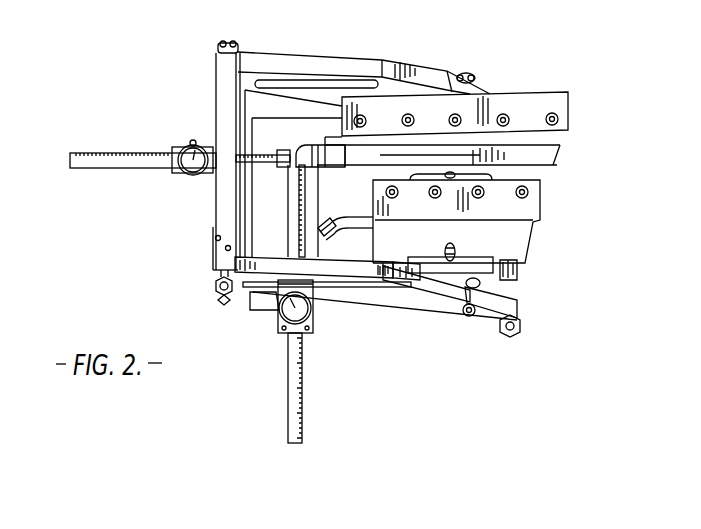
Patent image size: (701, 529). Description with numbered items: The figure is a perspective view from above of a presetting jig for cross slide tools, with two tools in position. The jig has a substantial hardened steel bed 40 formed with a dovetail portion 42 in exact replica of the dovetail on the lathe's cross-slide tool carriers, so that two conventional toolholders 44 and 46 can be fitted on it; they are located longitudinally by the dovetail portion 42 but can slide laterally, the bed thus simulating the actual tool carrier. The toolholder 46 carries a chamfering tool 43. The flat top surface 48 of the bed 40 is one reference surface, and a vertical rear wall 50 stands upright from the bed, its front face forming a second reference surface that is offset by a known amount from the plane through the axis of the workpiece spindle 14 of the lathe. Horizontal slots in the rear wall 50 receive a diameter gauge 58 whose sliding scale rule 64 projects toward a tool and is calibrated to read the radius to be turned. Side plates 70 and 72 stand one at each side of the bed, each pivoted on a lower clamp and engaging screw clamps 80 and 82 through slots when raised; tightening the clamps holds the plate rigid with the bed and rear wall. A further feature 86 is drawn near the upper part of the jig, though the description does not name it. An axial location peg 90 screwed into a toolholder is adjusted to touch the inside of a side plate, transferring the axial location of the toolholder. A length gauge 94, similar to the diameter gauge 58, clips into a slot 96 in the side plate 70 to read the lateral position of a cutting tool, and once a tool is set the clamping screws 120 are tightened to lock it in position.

The workpiece spindle 14 is at (507, 336).
The bed 40 is at (263, 211).
The dovetail portion 42 is at (475, 260).
The chamfering tool 43 is at (358, 223).
The toolholder 44 is at (492, 102).
The toolholder 46 is at (533, 238).
The top surface 48 is at (223, 100).
The vertical rear wall 50 is at (224, 194).
The diameter gauge 58 is at (147, 150).
The sliding scale rule 64 is at (110, 166).
The side plate 70 is at (405, 307).
The side plate 72 is at (395, 70).
The screw clamp 80 is at (217, 292).
The screw clamp 82 is at (461, 318).
The slot 86 is at (297, 85).
The axial location peg 90 is at (447, 252).
The length gauge 94 is at (306, 368).
The slot 96 is at (349, 290).
The clamping screws 120 is at (508, 116).